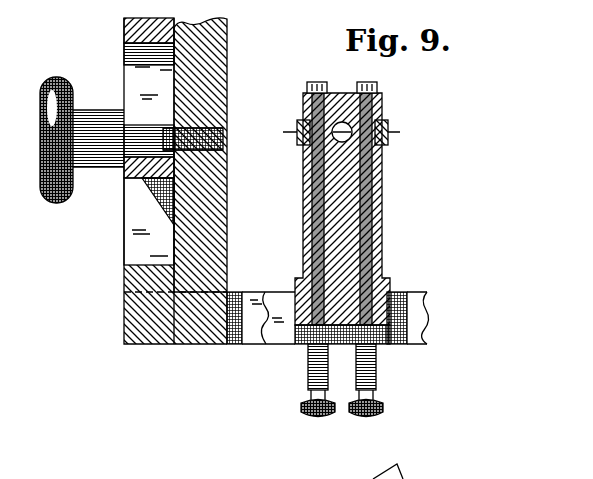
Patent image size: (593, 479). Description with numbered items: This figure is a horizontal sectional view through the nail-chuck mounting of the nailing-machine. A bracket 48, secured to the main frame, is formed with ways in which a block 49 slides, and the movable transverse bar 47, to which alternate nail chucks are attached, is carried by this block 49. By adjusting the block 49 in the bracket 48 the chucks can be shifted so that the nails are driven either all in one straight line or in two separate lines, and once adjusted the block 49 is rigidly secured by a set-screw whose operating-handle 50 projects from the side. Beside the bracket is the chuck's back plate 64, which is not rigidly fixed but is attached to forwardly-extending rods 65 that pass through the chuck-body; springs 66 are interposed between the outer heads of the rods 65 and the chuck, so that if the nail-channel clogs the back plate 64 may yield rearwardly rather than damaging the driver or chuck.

The transverse bar 47 is at (418, 323).
The bracket 48 is at (124, 38).
The block 49 is at (212, 98).
The operating-handle 50 is at (58, 205).
The back plate 64 is at (343, 95).
The rod 65 is at (312, 212).
The spring 66 is at (306, 372).